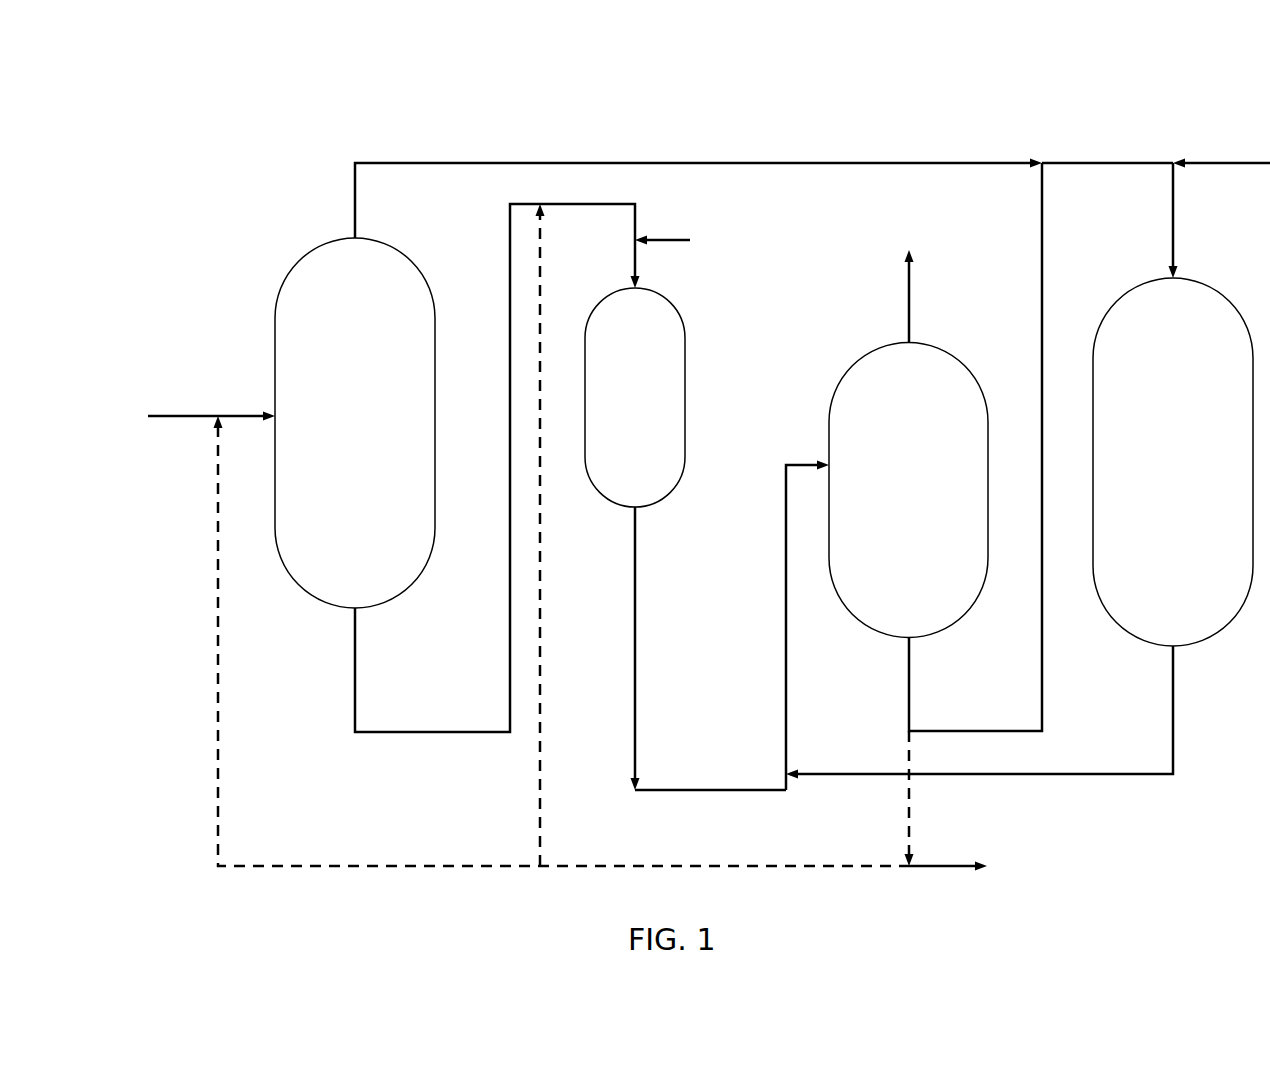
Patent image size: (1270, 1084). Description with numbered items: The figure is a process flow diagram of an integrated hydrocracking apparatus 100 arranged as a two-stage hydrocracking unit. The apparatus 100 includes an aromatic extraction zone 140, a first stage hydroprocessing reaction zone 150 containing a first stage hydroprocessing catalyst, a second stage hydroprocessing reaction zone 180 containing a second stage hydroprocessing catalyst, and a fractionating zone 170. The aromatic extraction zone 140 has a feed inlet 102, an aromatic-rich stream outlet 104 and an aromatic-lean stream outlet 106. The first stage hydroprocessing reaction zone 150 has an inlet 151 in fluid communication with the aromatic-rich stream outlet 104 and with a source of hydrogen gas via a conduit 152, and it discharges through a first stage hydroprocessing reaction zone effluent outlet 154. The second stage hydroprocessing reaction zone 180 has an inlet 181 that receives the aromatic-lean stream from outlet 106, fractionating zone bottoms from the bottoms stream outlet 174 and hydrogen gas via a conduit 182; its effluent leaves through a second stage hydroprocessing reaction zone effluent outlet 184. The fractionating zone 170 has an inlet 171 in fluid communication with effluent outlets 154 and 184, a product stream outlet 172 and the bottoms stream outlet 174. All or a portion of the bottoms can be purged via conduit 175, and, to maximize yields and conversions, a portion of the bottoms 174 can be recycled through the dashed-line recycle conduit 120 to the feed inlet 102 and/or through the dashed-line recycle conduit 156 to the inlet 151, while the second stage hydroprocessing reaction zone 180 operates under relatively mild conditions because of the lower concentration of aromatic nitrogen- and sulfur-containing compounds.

The integrated hydrocracking apparatus 100 is at (238, 155).
The feed inlet 102 is at (173, 415).
The aromatic-rich stream outlet 104 is at (355, 668).
The aromatic-lean stream outlet 106 is at (355, 205).
The recycle conduit 120 is at (215, 517).
The aromatic extraction zone 140 is at (371, 438).
The first stage hydroprocessing reaction zone 150 is at (653, 404).
The inlet 151 is at (632, 266).
The conduit 152 is at (670, 238).
The first stage hydroprocessing reaction zone effluent outlet 154 is at (636, 612).
The recycle conduit 156 is at (535, 508).
The fractionating zone 170 is at (926, 502).
The inlet 171 is at (798, 460).
The product stream outlet 172 is at (905, 292).
The bottoms stream outlet 174 is at (912, 677).
The conduit 175 is at (937, 870).
The second stage hydroprocessing reaction zone 180 is at (1191, 468).
The inlet 181 is at (1170, 218).
The conduit 182 is at (1242, 160).
The second stage hydroprocessing reaction zone effluent outlet 184 is at (1172, 713).